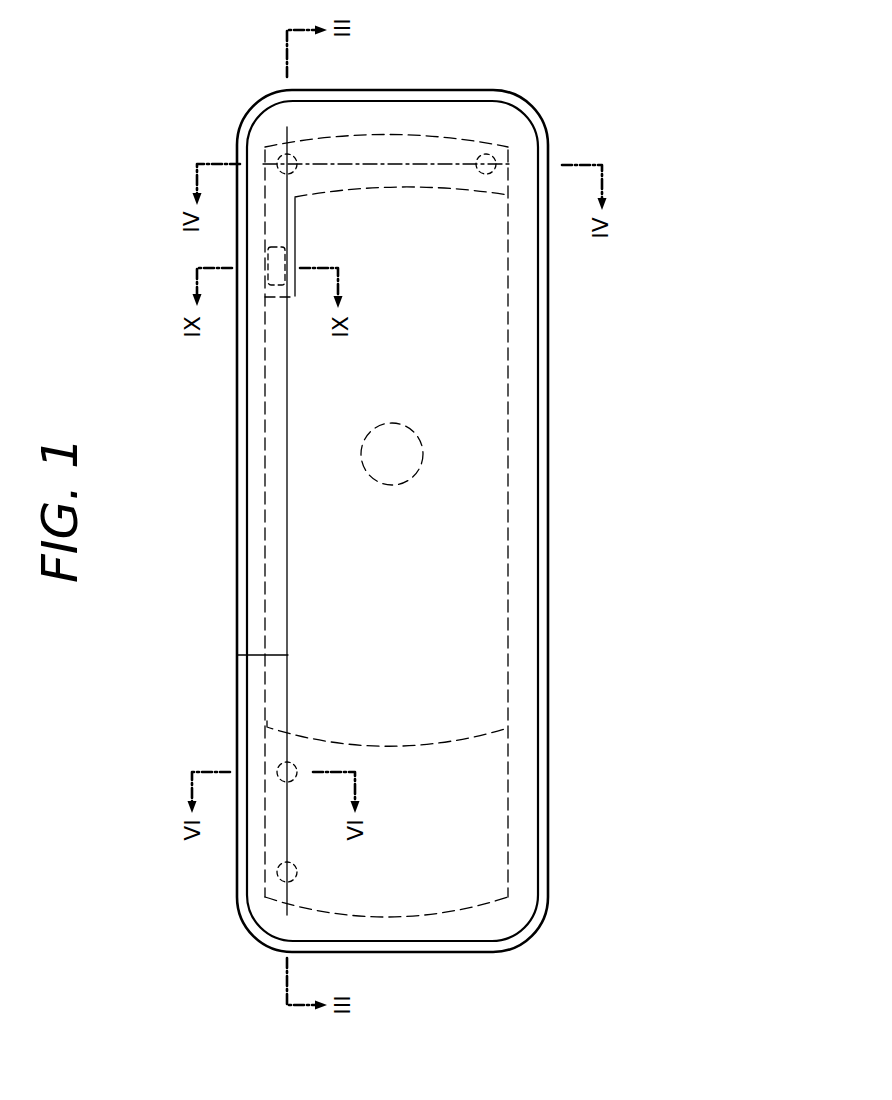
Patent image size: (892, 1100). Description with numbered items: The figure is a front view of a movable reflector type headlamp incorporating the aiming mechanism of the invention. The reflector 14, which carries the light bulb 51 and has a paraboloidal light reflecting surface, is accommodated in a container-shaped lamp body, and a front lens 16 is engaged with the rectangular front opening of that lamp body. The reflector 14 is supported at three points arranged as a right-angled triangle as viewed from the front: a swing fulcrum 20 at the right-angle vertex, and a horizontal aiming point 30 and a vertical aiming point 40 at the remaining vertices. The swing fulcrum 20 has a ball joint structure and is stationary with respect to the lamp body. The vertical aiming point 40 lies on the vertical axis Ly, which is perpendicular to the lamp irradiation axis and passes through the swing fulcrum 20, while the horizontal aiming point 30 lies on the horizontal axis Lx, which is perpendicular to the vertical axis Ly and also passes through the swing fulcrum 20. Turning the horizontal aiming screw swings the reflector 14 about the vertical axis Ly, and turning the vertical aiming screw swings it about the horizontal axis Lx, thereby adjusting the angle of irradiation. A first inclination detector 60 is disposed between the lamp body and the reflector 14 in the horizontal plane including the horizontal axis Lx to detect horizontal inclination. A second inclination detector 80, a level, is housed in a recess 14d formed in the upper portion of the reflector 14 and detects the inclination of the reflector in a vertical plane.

The reflector 14 is at (257, 602).
The recess 14d is at (290, 204).
The front lens 16 is at (488, 283).
The swing fulcrum 20 is at (262, 149).
The horizontal aiming point 30 is at (261, 878).
The vertical aiming point 40 is at (506, 155).
The first inclination detector 60 is at (262, 763).
The light bulb 51 is at (363, 450).
The second inclination detector 80 is at (255, 257).
The horizontal axis Lx is at (230, 652).
The vertical axis Ly is at (440, 163).